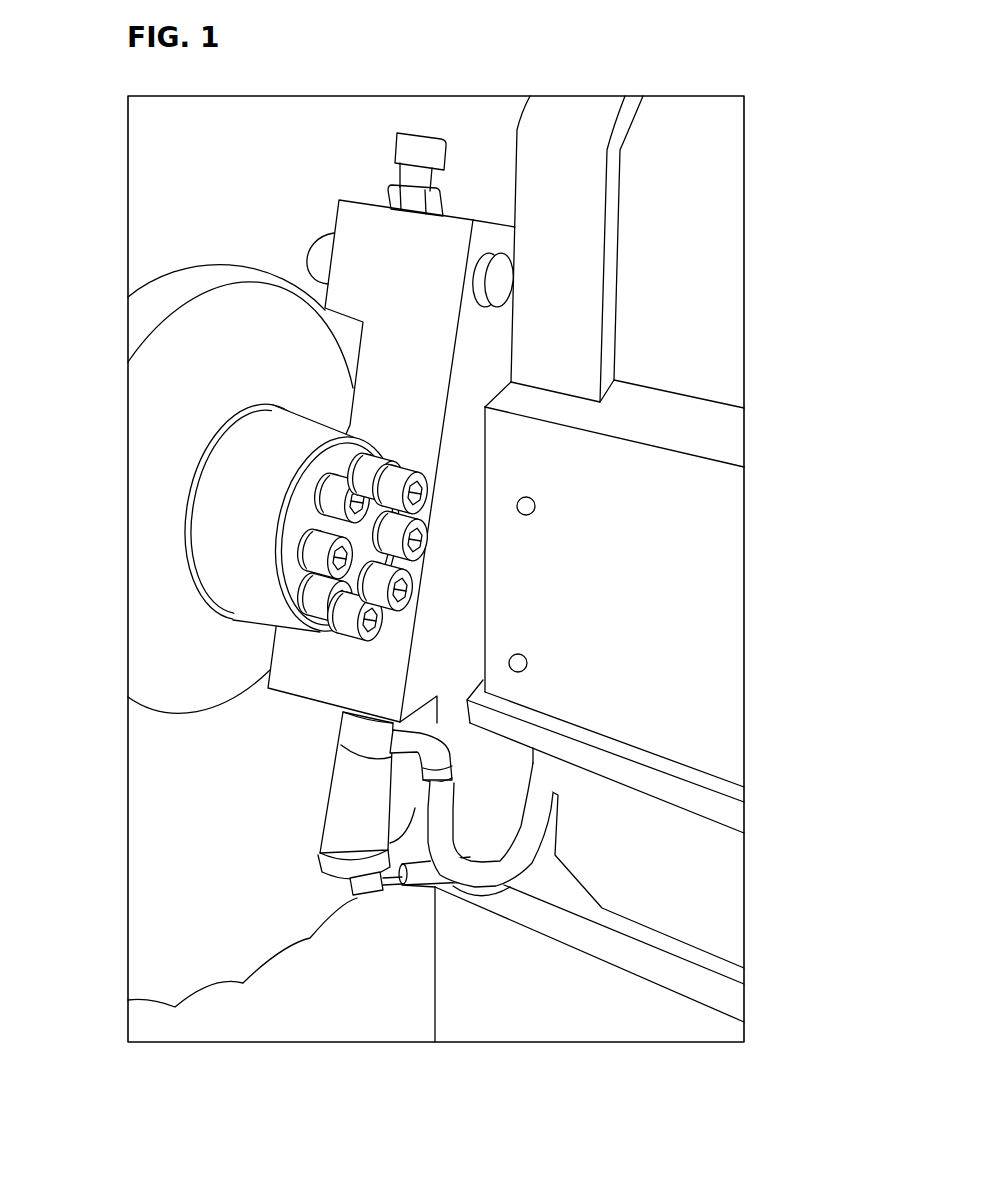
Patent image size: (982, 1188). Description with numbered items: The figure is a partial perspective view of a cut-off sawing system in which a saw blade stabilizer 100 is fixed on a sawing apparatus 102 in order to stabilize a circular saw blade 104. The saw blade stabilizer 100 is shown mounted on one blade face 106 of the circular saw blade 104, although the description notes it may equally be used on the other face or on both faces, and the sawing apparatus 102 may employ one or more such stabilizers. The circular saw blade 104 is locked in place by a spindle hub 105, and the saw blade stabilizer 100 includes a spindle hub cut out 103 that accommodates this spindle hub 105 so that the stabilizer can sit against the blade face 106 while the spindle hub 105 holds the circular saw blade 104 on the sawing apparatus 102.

The saw blade stabilizer 100 is at (497, 212).
The sawing apparatus 102 is at (713, 289).
The spindle hub cut out 103 is at (338, 387).
The circular saw blade 104 is at (220, 1025).
The spindle hub 105 is at (241, 524).
The blade face 106 is at (184, 863).